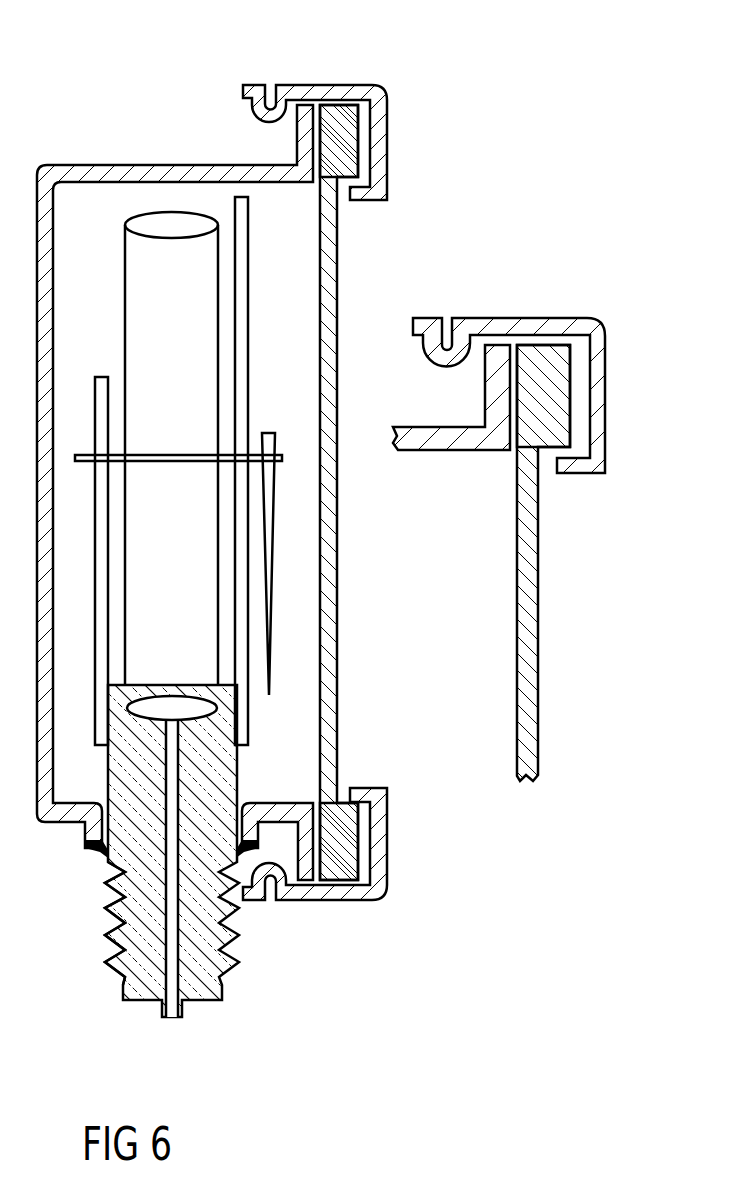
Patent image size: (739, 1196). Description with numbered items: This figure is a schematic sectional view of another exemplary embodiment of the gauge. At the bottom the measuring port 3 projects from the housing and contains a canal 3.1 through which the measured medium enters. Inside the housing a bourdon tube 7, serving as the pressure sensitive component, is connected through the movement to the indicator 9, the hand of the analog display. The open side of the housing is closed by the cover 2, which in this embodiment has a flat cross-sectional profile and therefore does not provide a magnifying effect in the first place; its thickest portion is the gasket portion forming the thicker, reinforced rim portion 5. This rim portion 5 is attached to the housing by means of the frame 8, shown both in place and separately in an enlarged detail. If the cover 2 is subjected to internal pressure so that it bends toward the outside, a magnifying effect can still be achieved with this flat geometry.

The cover 2 is at (330, 625).
The measuring port 3 is at (148, 1036).
The canal 3.1 is at (170, 925).
The rim portion 5 is at (345, 143).
The bourdon tube 7 is at (135, 290).
The frame 8 is at (338, 85).
The indicator 9 is at (270, 554).